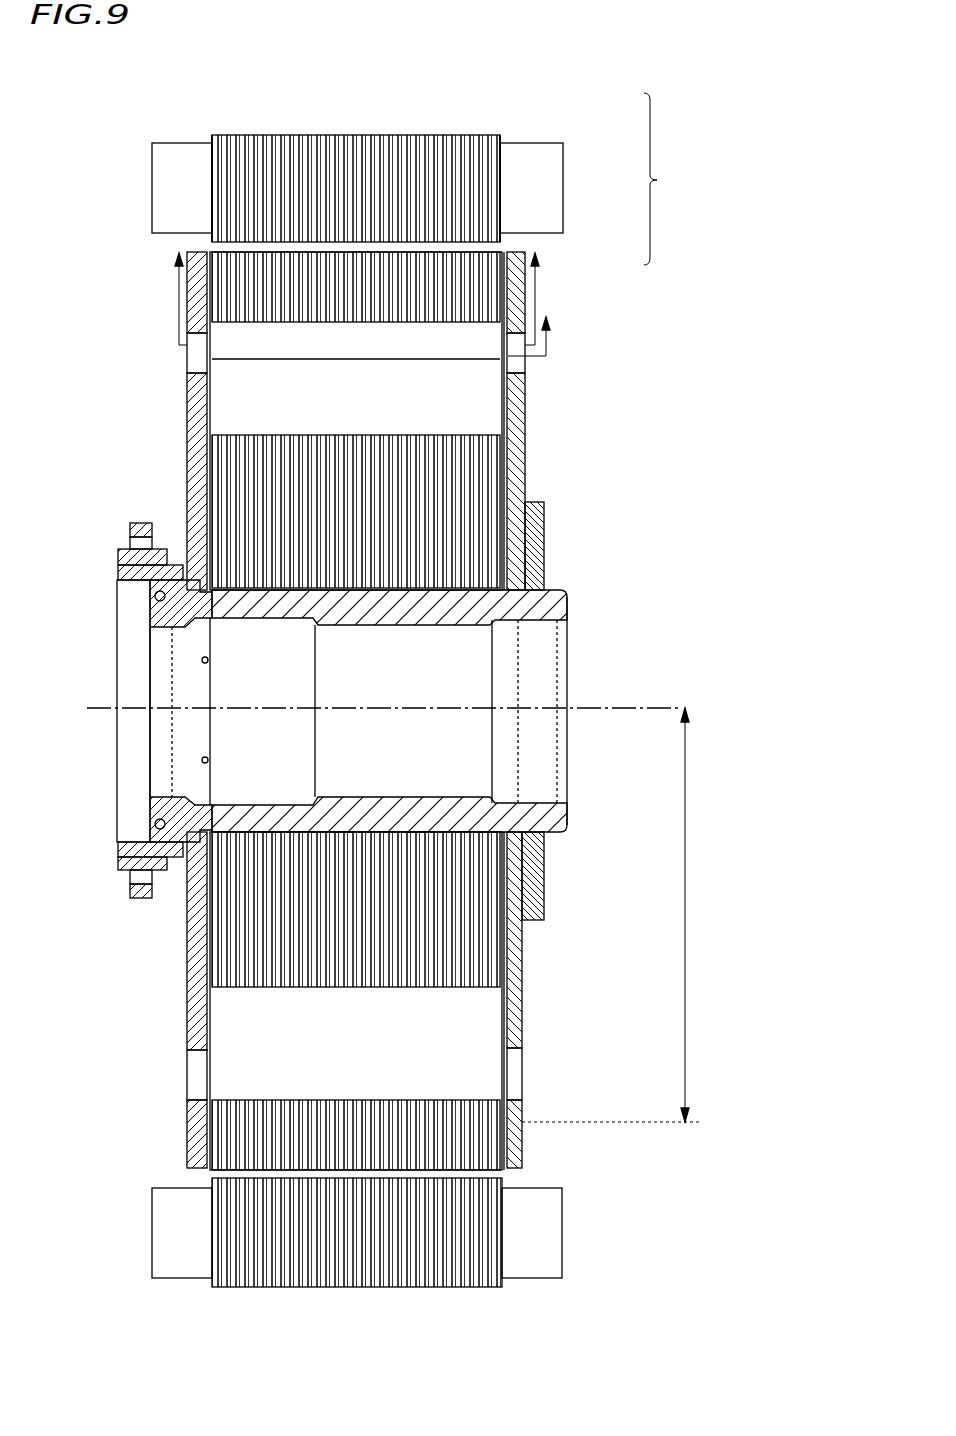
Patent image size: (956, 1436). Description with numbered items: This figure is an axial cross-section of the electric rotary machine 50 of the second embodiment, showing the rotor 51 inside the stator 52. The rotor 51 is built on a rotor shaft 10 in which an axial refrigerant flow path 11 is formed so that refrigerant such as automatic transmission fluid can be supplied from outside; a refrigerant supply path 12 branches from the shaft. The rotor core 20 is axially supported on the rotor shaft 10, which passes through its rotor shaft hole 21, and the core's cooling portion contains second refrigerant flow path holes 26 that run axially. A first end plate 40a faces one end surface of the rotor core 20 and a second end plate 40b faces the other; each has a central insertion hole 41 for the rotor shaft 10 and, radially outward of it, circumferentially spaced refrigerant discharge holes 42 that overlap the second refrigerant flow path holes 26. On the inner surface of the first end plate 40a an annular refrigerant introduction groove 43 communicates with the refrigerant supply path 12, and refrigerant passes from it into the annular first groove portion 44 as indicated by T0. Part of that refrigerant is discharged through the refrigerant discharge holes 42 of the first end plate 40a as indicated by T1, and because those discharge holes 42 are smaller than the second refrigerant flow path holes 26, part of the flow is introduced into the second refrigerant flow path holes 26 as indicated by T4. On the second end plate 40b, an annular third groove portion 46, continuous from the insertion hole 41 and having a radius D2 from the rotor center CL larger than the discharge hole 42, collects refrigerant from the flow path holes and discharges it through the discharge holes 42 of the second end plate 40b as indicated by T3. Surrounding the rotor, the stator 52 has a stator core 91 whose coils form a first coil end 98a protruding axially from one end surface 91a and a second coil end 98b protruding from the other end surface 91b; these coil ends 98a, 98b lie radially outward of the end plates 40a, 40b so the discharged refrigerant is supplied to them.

The rotor shaft 10 is at (455, 605).
The refrigerant flow path 11 is at (478, 630).
The refrigerant supply path 12 is at (200, 662).
The rotor core 20 is at (384, 672).
The rotor shaft hole 21 is at (458, 588).
The second refrigerant flow path holes 26 is at (352, 345).
The first end plate 40a is at (197, 942).
The second end plate 40b is at (522, 955).
The insertion hole 41 is at (213, 812).
The refrigerant discharge holes 42 is at (193, 352).
The refrigerant introduction groove 43 is at (237, 800).
The first groove portion 44 is at (232, 962).
The third groove portion 46 is at (488, 1010).
The electric rotary machine 50 is at (666, 179).
The rotor 51 is at (556, 352).
The stator 52 is at (384, 150).
The stator core 91 is at (347, 150).
The one end surface 91a is at (212, 158).
The other end surface 91b is at (502, 150).
The first coil end 98a is at (182, 170).
The second coil end 98b is at (530, 155).
The center CL is at (598, 706).
The radius of the third groove portion D2 is at (619, 915).
The refrigerant flow from introduction groove to first groove portion T0 is at (200, 505).
The refrigerant discharge flow through second groove portion T1 is at (168, 299).
The refrigerant discharge flow through third groove portion T3 is at (543, 299).
The refrigerant flow into second refrigerant flow path hole T4 is at (542, 334).